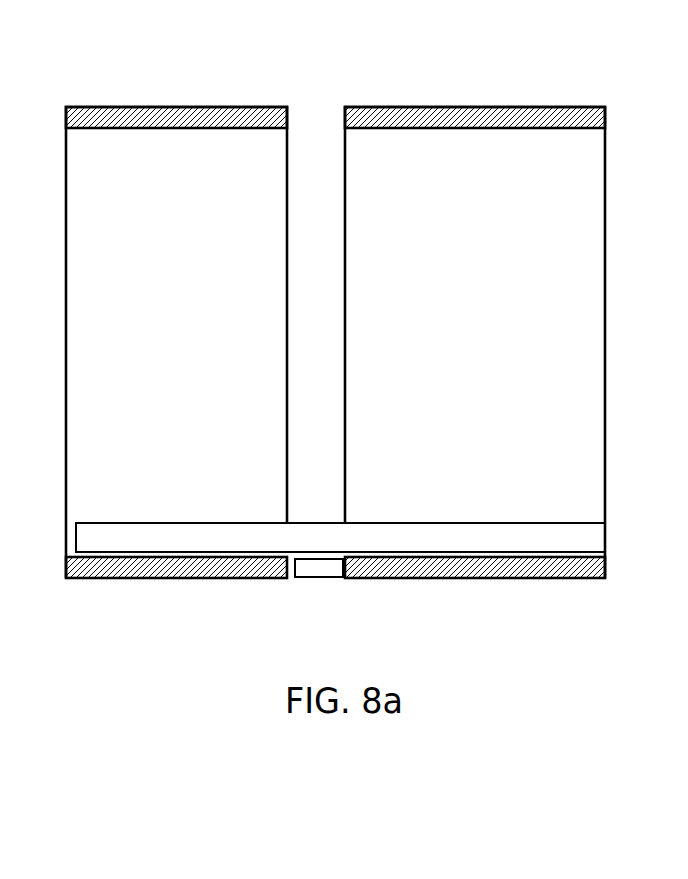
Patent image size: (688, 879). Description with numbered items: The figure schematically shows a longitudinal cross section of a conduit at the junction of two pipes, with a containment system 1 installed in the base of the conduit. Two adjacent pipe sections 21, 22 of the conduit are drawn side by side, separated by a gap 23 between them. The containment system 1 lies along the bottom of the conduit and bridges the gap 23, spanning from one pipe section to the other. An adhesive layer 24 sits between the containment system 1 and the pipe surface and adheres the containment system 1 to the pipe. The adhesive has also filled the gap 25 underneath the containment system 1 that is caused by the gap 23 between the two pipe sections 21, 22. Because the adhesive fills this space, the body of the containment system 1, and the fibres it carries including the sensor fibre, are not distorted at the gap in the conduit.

The containment system 1 is at (350, 344).
The pipe section 21 is at (137, 173).
The pipe section 22 is at (585, 188).
The gap 23 is at (313, 187).
The adhesive layer 24 is at (607, 553).
The gap underneath the containment system 25 is at (320, 580).